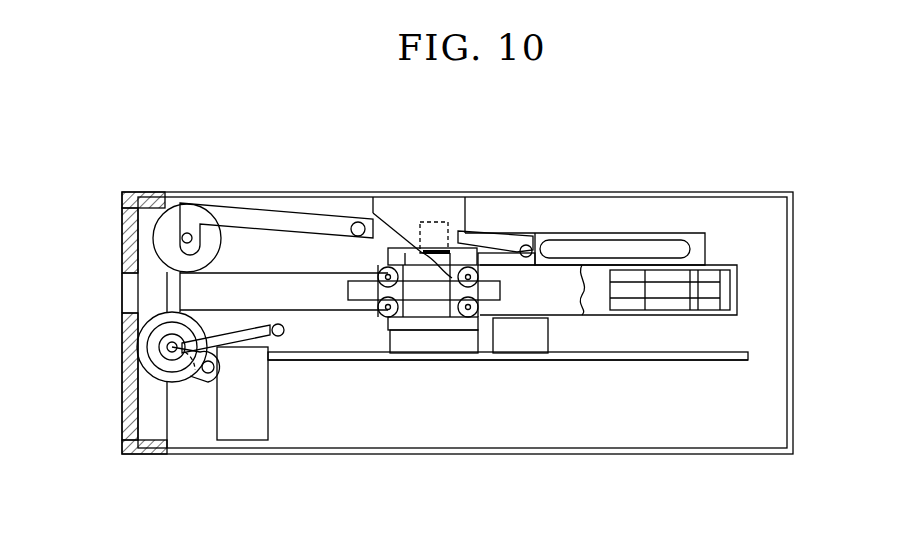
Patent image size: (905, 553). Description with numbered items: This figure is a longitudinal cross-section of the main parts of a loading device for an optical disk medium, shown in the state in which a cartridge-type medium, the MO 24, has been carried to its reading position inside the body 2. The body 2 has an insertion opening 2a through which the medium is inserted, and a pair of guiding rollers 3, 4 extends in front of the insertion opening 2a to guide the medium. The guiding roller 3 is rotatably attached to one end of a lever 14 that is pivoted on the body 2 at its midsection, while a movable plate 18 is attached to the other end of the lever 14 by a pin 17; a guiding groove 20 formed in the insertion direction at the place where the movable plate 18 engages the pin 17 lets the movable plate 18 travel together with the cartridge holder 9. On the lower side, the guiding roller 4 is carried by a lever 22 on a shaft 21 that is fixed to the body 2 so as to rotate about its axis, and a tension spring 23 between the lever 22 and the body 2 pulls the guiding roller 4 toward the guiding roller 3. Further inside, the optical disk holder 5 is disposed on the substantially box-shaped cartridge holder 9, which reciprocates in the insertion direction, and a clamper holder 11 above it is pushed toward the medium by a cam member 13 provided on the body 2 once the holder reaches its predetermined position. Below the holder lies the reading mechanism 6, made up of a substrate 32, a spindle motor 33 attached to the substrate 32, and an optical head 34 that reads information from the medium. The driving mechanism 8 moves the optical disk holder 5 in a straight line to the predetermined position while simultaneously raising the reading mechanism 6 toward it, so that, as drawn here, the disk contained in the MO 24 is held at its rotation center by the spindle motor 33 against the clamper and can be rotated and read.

The body 2 is at (122, 192).
The insertion opening 2a is at (122, 282).
The guiding roller 3 is at (153, 240).
The guiding roller 4 is at (143, 348).
The optical disk holder 5 is at (440, 317).
The reading mechanism 6 is at (700, 362).
The driving mechanism 8 is at (235, 427).
The cartridge holder 9 is at (737, 293).
The clamper holder 11 is at (421, 252).
The cam member 13 is at (418, 207).
The lever 14 is at (242, 218).
The pin 17 is at (540, 233).
The movable plate 18 is at (703, 245).
The guiding groove 20 is at (642, 247).
The shaft 21 is at (207, 380).
The lever 22 is at (175, 358).
The tension spring 23 is at (238, 340).
The MO 24 is at (287, 270).
The substrate 32 is at (620, 362).
The spindle motor 33 is at (407, 343).
The optical head 34 is at (517, 345).